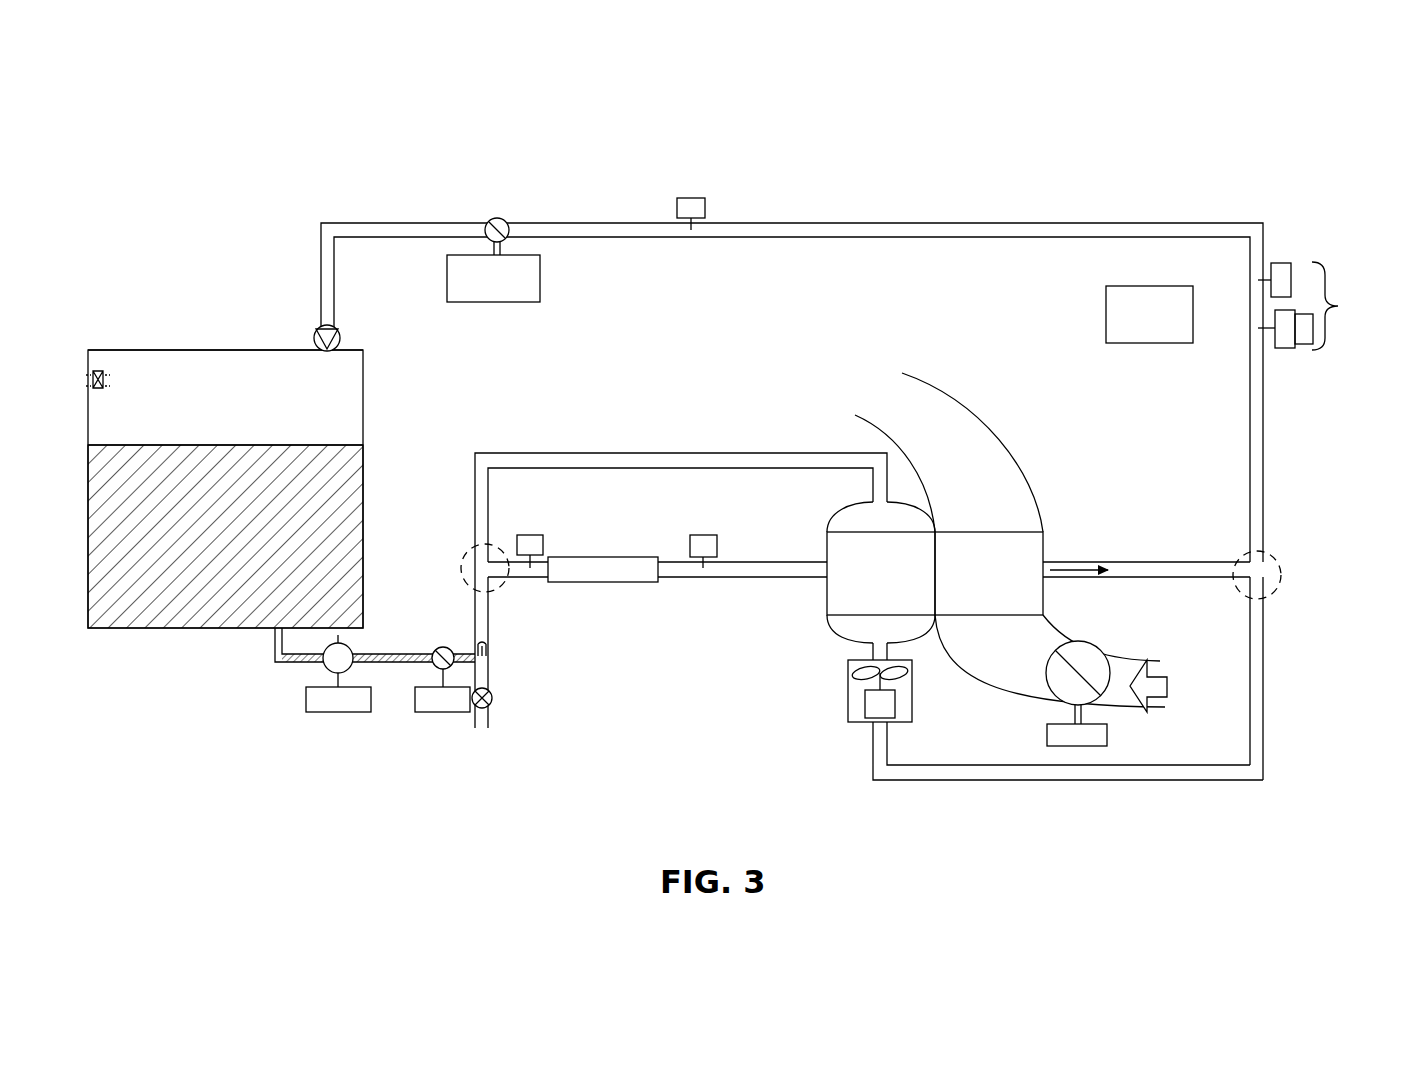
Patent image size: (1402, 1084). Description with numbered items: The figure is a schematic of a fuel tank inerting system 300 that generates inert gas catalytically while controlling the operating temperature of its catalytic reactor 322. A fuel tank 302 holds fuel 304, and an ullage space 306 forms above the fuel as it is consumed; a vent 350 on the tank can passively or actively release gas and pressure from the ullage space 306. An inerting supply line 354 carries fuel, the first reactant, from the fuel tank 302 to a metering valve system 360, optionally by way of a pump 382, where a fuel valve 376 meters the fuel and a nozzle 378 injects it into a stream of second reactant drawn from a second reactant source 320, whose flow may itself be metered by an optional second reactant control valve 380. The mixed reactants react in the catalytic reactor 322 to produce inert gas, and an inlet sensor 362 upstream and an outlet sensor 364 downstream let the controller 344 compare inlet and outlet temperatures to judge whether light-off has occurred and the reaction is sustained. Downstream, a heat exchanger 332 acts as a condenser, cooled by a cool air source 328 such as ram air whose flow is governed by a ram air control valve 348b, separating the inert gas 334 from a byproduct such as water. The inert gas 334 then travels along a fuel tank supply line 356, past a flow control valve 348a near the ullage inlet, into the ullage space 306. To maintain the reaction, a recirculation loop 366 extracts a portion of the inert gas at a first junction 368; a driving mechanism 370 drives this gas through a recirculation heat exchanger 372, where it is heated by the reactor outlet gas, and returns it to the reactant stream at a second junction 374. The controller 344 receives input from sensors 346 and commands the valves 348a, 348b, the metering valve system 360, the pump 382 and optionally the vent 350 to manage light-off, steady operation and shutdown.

The inerting system 300 is at (218, 143).
The fuel tank 302 is at (363, 407).
The fuel 304 is at (185, 602).
The ullage space 306 is at (160, 372).
The second reactant source 320 is at (504, 762).
The catalytic reactor 322 is at (605, 582).
The cool air source 328 is at (1221, 698).
The heat exchanger 332 is at (1012, 588).
The inert gas 334 is at (1085, 562).
The controller 344 is at (1173, 330).
The sensors 346 is at (692, 202).
The flow control valve 348a is at (522, 295).
The ram air control valve 348b is at (1086, 646).
The vent 350 is at (90, 377).
The inerting supply line 354 is at (385, 654).
The fuel tank supply line 356 is at (890, 223).
The metering valve system 360 is at (514, 666).
The inlet sensor 362 is at (532, 543).
The outlet sensor 364 is at (705, 543).
The recirculation loop 366 is at (670, 453).
The first junction 368 is at (1279, 588).
The driving mechanism 370 is at (850, 692).
The recirculation heat exchanger 372 is at (904, 588).
The second junction 374 is at (462, 553).
The fuel valve 376 is at (445, 712).
The nozzle 378 is at (490, 652).
The second reactant control valve 380 is at (493, 702).
The pump 382 is at (335, 712).